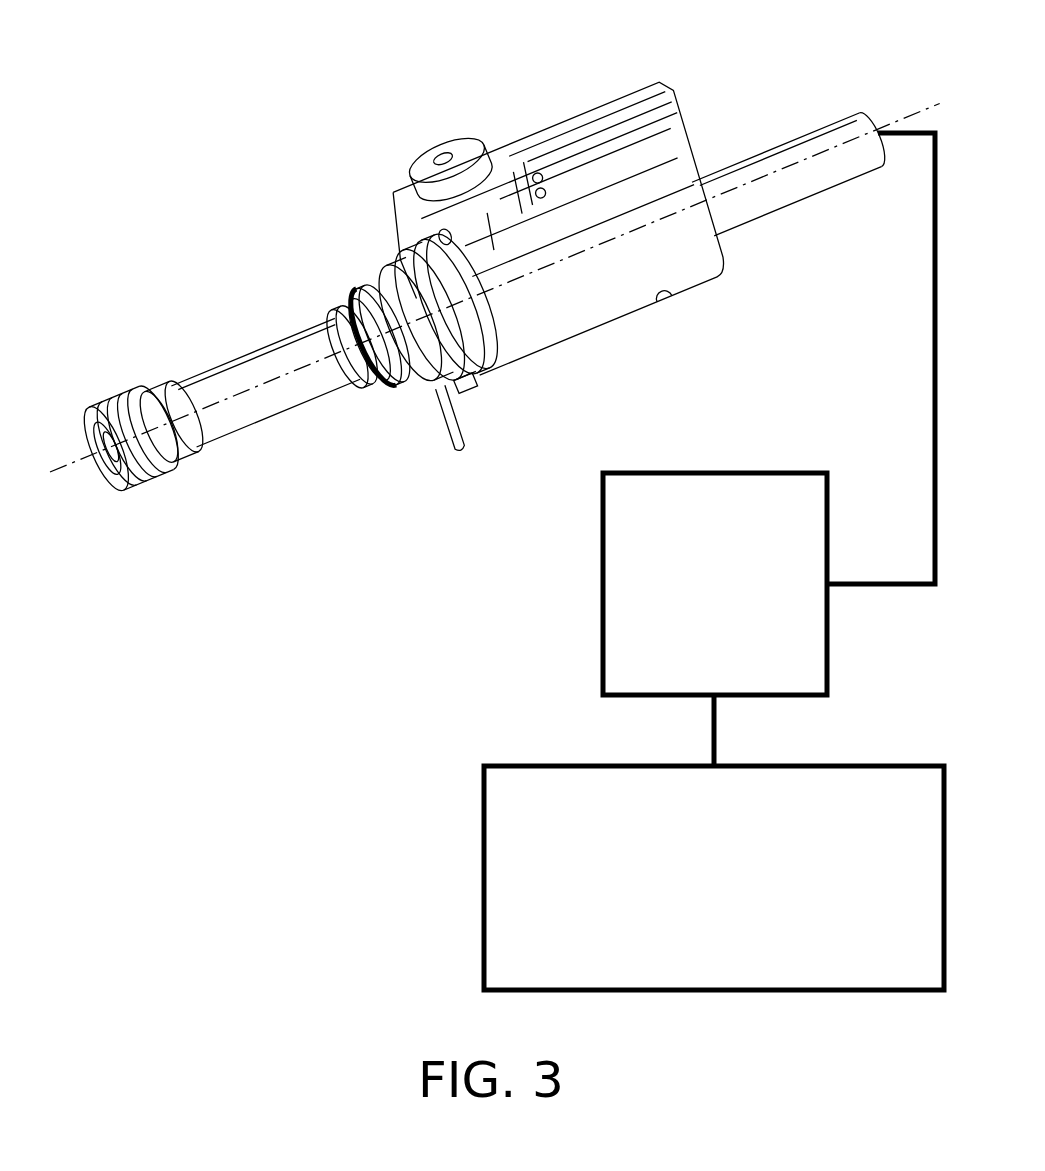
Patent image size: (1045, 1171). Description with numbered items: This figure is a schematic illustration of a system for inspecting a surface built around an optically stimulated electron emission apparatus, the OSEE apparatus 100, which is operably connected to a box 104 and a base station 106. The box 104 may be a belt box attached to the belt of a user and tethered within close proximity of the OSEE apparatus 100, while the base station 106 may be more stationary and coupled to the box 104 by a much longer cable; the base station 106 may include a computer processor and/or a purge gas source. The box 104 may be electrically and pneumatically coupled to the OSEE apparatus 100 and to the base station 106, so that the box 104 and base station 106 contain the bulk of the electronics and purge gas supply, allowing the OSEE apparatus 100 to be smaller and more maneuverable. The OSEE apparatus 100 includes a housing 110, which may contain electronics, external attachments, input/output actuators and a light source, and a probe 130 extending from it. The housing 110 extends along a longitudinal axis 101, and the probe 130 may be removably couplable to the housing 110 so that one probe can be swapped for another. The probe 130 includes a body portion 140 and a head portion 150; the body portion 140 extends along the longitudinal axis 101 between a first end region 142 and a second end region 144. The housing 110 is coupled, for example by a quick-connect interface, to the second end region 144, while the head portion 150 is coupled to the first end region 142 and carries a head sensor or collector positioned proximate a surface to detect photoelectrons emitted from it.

The OSEE apparatus 100 is at (299, 93).
The longitudinal axis 101 is at (80, 467).
The box 104 is at (690, 597).
The base station 106 is at (690, 892).
The housing 110 is at (603, 339).
The probe 130 is at (226, 346).
The body portion 140 is at (273, 410).
The first end region 142 is at (163, 402).
The second end region 144 is at (318, 327).
The head portion 150 is at (133, 475).